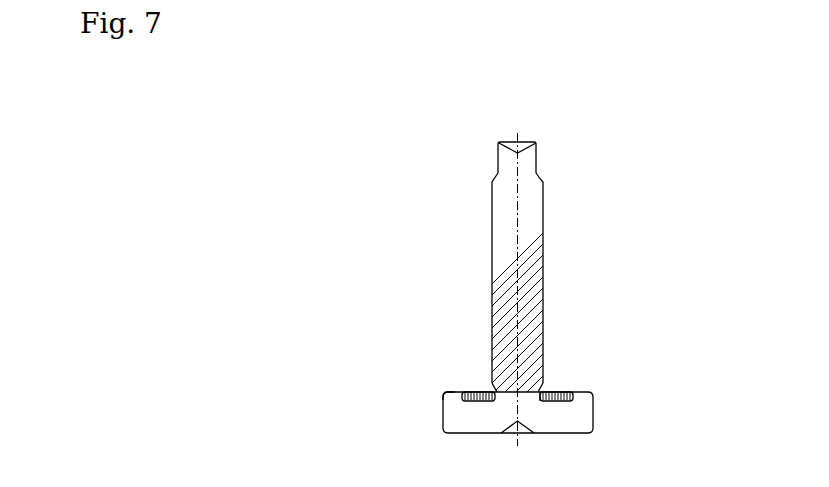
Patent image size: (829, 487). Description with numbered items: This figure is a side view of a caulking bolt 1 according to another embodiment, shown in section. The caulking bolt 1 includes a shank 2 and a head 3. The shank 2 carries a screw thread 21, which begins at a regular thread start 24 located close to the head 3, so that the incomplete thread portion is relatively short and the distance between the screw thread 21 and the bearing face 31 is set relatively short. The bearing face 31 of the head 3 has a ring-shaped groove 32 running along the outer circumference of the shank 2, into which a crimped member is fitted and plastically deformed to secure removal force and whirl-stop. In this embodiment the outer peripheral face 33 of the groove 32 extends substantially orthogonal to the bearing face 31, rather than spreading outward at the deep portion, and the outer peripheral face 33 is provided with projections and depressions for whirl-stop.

The caulking bolt 1 is at (684, 220).
The shank 2 is at (537, 158).
The screw thread 21 is at (492, 185).
The regular thread start 24 is at (493, 385).
The head 3 is at (593, 408).
The bearing face 31 is at (580, 392).
The groove 32 is at (560, 392).
The outer peripheral face 33 is at (445, 393).